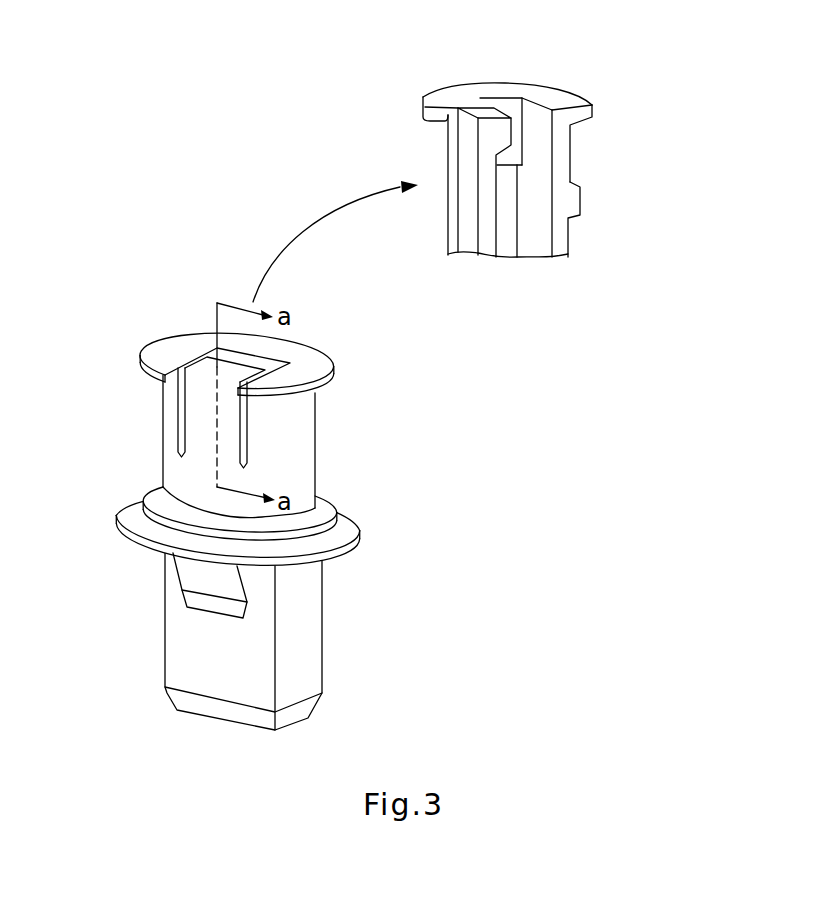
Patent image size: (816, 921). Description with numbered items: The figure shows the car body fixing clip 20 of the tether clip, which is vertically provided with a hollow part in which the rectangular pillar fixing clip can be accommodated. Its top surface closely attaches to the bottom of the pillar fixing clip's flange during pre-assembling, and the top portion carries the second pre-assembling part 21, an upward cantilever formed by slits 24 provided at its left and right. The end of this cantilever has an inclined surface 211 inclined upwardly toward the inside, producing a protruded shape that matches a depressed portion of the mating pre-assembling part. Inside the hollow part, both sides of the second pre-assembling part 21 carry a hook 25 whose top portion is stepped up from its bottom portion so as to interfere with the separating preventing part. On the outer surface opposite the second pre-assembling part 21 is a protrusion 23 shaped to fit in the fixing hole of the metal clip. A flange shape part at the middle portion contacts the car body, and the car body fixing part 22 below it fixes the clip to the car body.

The car body fixing clip 20 is at (378, 680).
The second pre-assembling part 21 is at (192, 392).
The car body fixing part 22 is at (188, 567).
The protrusion 23 is at (576, 203).
The slit 24 is at (185, 440).
The hook 25 is at (508, 170).
The inclined surface 211 is at (500, 140).